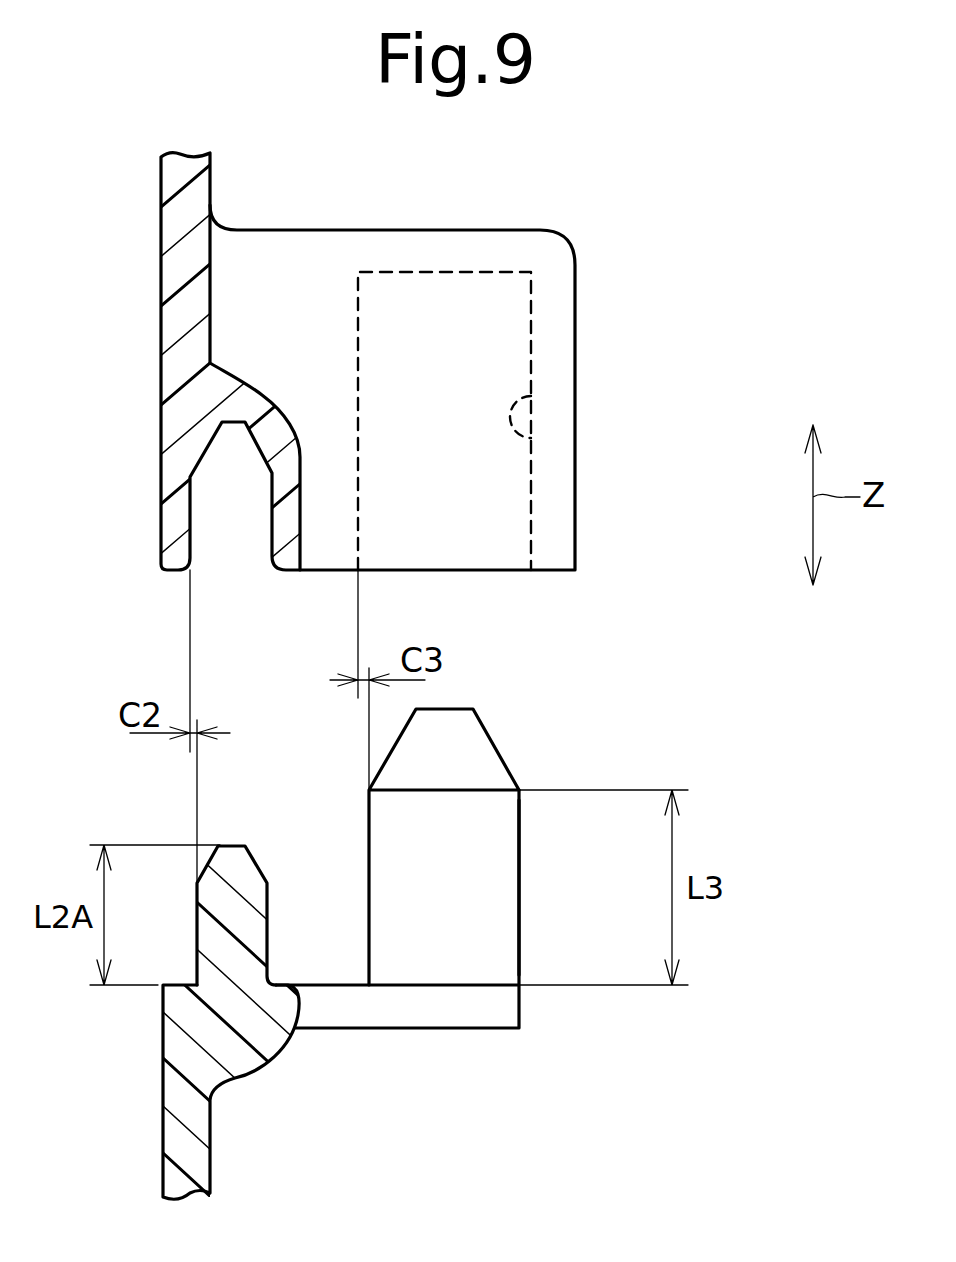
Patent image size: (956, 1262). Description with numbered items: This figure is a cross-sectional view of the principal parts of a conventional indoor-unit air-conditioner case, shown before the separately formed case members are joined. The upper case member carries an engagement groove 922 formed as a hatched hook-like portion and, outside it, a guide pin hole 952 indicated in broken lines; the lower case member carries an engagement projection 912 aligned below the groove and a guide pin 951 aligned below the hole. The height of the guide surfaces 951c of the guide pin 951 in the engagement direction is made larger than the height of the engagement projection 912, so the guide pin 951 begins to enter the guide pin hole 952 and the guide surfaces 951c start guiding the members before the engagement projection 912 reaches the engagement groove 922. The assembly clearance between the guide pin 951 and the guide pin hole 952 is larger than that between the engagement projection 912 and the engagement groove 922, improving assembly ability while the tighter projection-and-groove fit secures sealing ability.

The engagement projection 912 is at (253, 928).
The engagement groove 922 is at (265, 520).
The guide pin 951 is at (490, 845).
The guide surfaces 951c is at (519, 920).
The guide pin hole 952 is at (531, 438).